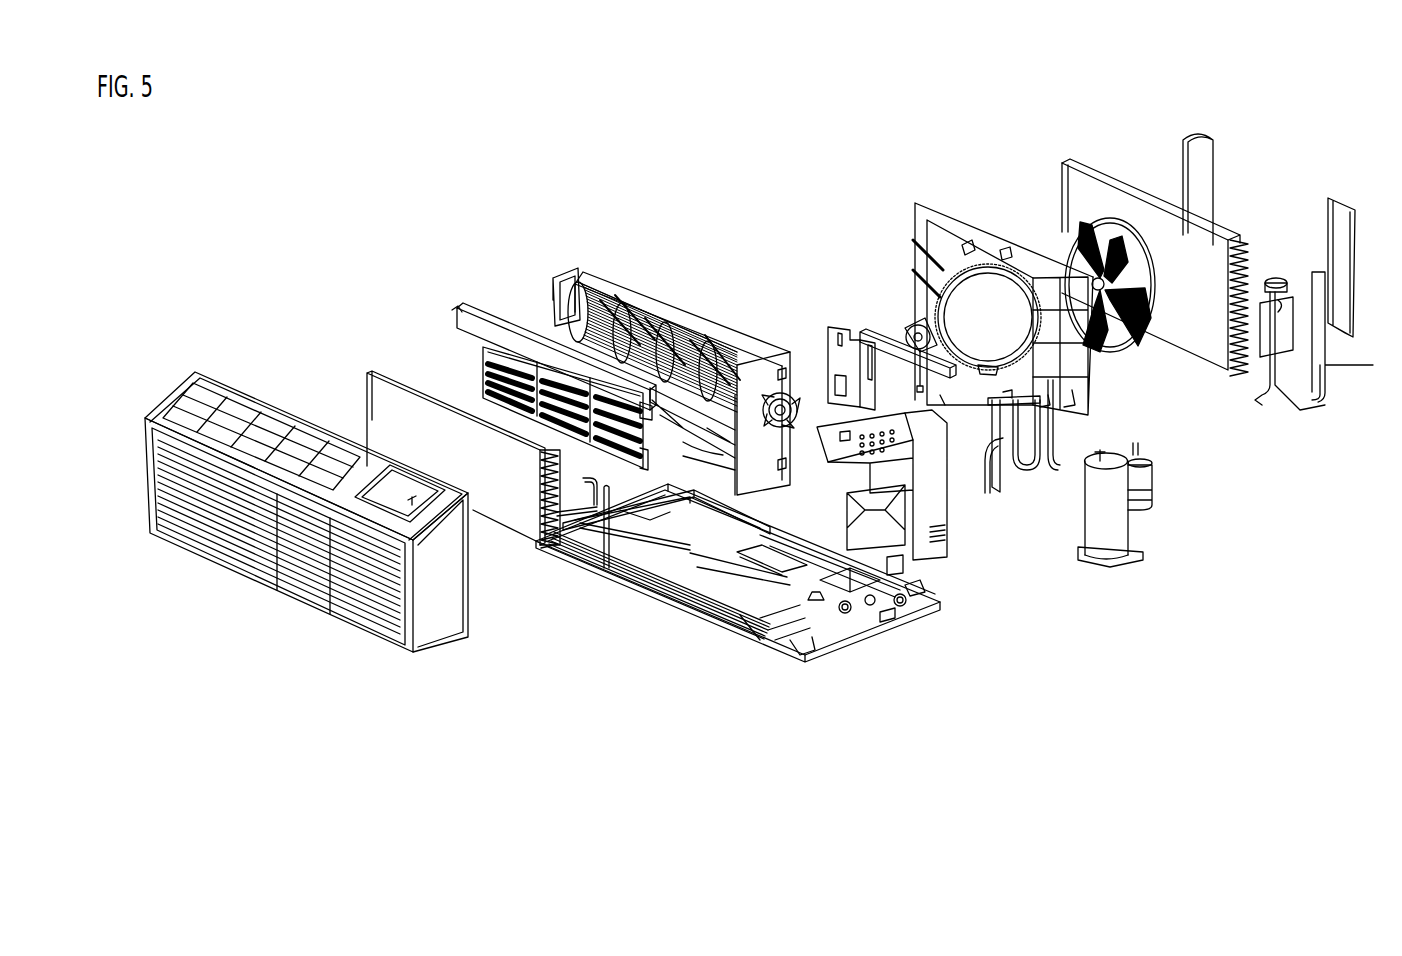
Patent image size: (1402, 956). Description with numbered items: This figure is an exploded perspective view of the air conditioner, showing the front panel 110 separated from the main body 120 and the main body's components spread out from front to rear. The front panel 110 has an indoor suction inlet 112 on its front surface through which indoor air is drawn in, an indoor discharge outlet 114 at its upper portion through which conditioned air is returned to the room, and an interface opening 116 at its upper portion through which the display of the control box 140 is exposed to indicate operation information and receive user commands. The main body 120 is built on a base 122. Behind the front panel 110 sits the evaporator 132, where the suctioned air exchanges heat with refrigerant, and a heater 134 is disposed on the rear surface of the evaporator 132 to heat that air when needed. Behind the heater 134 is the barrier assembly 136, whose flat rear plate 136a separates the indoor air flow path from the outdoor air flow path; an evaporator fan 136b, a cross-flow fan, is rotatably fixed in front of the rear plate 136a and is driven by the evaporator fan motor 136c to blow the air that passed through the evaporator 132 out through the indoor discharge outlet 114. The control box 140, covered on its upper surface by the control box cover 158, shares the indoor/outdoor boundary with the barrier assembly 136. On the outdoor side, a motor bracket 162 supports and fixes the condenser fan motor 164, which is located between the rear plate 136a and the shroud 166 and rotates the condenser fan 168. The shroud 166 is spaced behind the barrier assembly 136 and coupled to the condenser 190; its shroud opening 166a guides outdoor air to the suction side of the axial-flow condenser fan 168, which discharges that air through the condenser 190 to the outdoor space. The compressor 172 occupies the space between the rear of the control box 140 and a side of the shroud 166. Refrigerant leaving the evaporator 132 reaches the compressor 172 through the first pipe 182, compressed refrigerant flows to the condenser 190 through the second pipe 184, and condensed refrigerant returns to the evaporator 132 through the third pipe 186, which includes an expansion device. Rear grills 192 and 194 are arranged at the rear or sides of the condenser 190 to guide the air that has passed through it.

The front panel 110 is at (301, 497).
The indoor suction inlet 112 is at (255, 557).
The indoor discharge outlet 114 is at (178, 427).
The interface opening 116 is at (417, 503).
The main body 120 is at (462, 241).
The base 122 is at (750, 637).
The evaporator 132 is at (375, 372).
The heater 134 is at (465, 312).
The barrier assembly 136 is at (660, 363).
The rear plate 136a is at (637, 252).
The evaporator fan 136b is at (573, 272).
The evaporator fan motor 136c is at (760, 367).
The control box 140 is at (945, 540).
The control box cover 158 is at (865, 332).
The motor bracket 162 is at (840, 325).
The condenser fan motor 164 is at (908, 325).
The shroud 166 is at (973, 292).
The shroud opening 166a is at (981, 308).
The condenser fan 168 is at (1080, 227).
The compressor 172 is at (1120, 552).
The first pipe 182 is at (607, 563).
The second pipe 184 is at (1002, 492).
The third pipe 186 is at (1303, 410).
The condenser 190 is at (1078, 163).
The rear grill 192 is at (1200, 131).
The rear grill 194 is at (1340, 207).